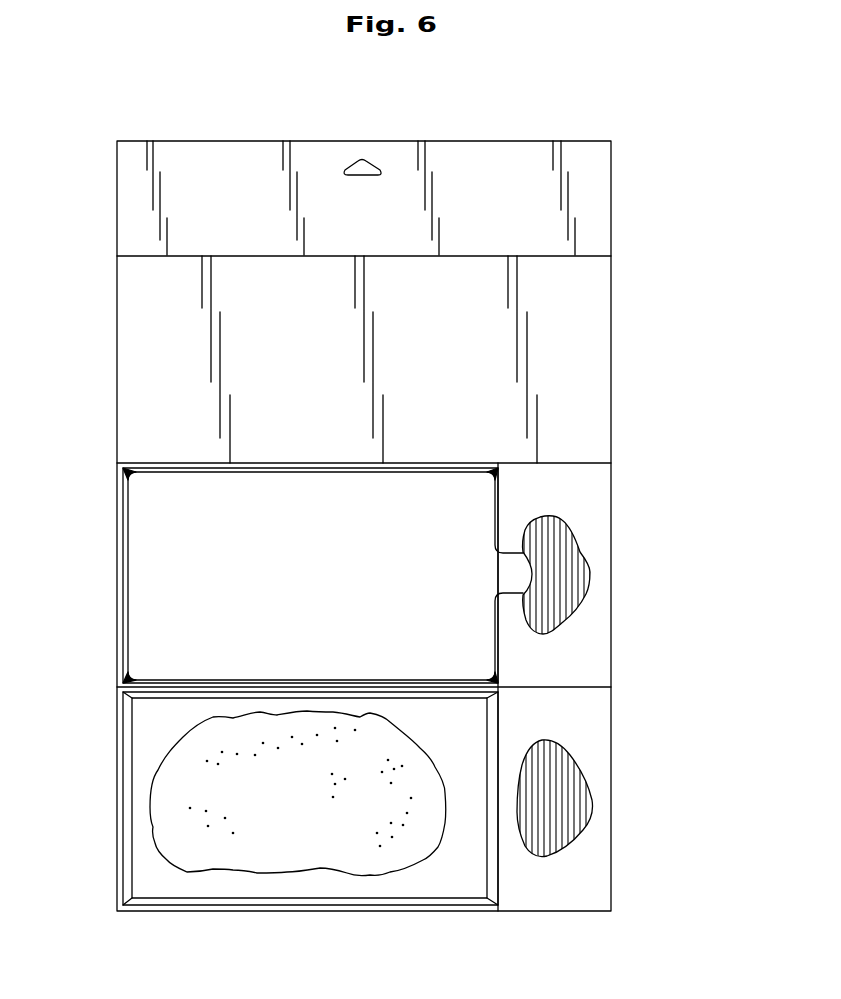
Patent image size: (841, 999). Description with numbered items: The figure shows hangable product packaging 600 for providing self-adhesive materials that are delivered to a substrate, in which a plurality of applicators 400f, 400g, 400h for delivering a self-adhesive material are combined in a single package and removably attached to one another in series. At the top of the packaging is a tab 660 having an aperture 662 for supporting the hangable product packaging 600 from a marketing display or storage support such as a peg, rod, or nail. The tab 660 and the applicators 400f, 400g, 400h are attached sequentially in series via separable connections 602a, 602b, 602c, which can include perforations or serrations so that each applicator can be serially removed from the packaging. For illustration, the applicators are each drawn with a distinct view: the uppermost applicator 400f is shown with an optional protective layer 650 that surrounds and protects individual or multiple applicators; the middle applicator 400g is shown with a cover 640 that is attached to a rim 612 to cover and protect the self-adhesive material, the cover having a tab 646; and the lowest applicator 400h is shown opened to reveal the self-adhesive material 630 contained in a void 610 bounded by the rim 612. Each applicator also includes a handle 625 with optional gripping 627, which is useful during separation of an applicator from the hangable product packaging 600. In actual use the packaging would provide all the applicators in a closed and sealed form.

The hangable product packaging 600 is at (176, 105).
The tab 660 is at (583, 210).
The aperture 662 is at (359, 165).
The separable connection 602a is at (580, 256).
The applicator 400f is at (582, 359).
The protective layer 650 is at (157, 356).
The separable connection 602b is at (580, 452).
The applicator 400g is at (594, 502).
The cover 640 is at (157, 560).
The tab 646 is at (523, 572).
The handle 625 is at (593, 644).
The separable connection 602c is at (580, 687).
The rim 612 is at (123, 680).
The void 610 is at (458, 875).
The self-adhesive material 630 is at (163, 783).
The applicator 400h is at (590, 740).
The gripping 627 is at (580, 846).